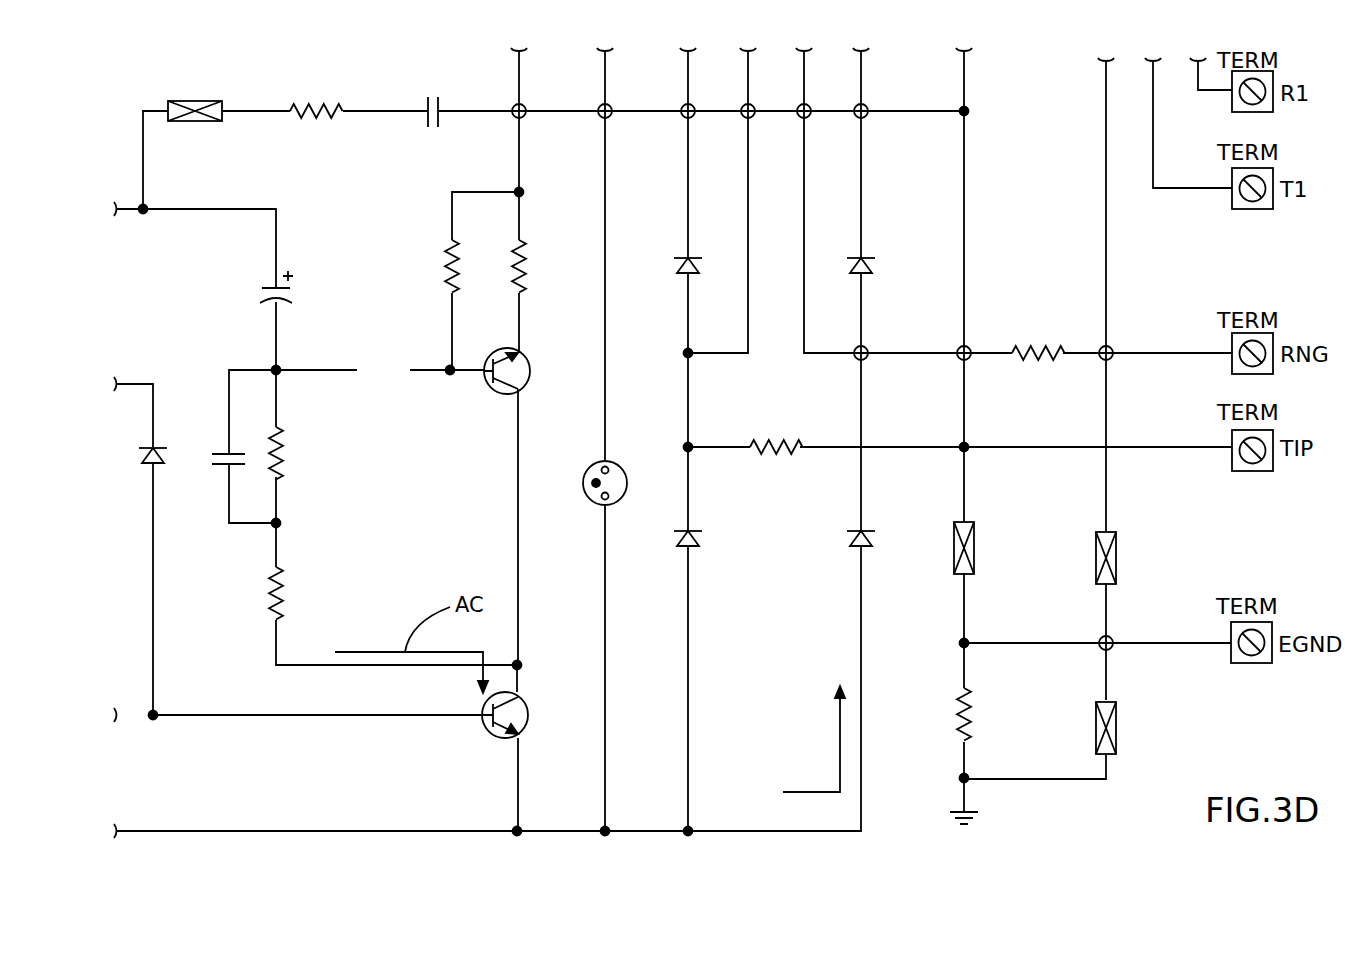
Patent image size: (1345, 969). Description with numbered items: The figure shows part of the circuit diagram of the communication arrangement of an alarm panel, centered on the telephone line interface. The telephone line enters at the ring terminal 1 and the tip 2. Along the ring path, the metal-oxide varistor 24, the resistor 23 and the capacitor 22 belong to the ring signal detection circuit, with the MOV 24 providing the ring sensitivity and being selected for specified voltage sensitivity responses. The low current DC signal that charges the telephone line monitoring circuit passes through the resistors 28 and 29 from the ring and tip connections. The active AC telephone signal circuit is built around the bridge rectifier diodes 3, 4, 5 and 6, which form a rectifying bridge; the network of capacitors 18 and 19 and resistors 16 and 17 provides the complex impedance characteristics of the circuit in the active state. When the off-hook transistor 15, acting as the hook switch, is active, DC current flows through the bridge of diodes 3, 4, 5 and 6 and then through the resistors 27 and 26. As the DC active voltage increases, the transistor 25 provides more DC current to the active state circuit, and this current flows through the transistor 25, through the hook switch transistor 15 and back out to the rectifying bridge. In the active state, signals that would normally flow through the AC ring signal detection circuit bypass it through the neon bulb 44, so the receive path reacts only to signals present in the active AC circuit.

The ring terminal 1 is at (1217, 346).
The tip 2 is at (1222, 455).
The bridge rectifier diode 3 is at (846, 270).
The bridge rectifier diode 4 is at (680, 258).
The bridge rectifier diode 5 is at (670, 539).
The bridge rectifier diode 6 is at (875, 540).
The off-hook transistor 15 is at (468, 730).
The resistor 16 is at (258, 604).
The resistor 17 is at (280, 424).
The capacitor 18 is at (209, 458).
The capacitor 19 is at (256, 293).
The capacitor 22 is at (422, 122).
The resistor 23 is at (334, 120).
The metal-oxide varistor 24 is at (190, 126).
The transistor 25 is at (538, 357).
The resistor 26 is at (526, 246).
The resistor 27 is at (441, 240).
The resistor 28 is at (1055, 370).
The resistor 29 is at (798, 462).
The neon bulb 44 is at (583, 483).